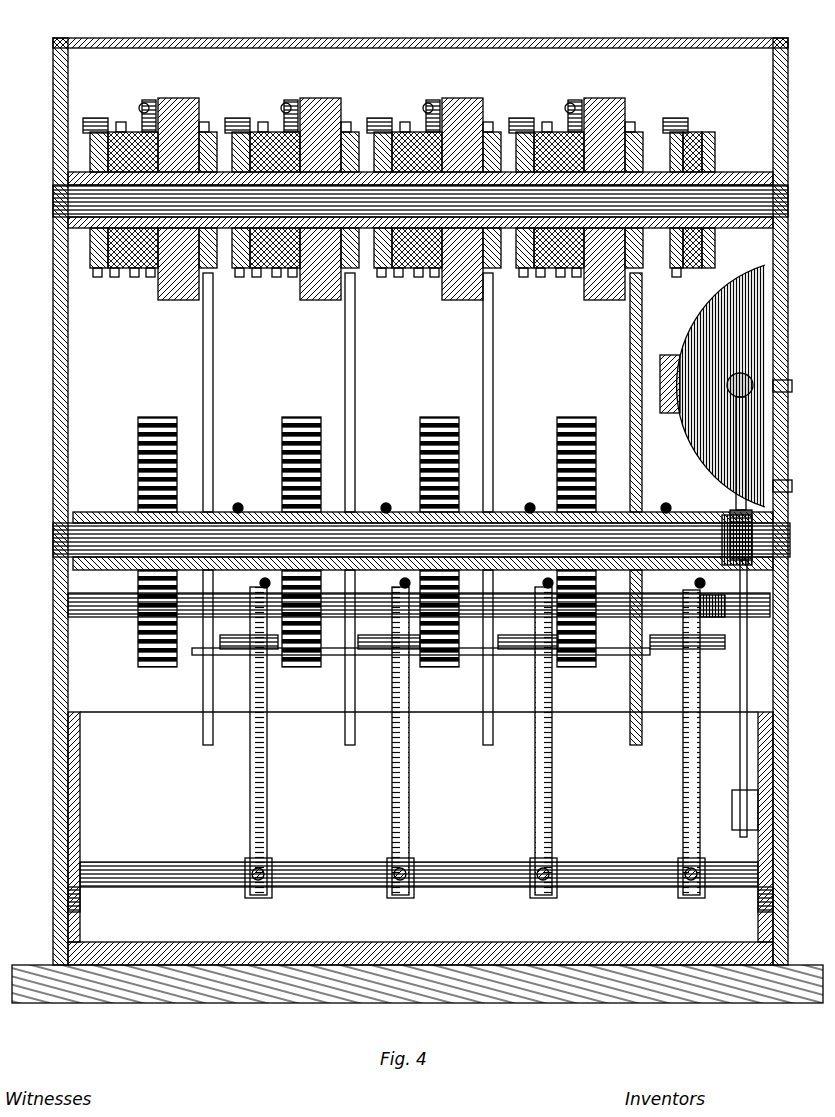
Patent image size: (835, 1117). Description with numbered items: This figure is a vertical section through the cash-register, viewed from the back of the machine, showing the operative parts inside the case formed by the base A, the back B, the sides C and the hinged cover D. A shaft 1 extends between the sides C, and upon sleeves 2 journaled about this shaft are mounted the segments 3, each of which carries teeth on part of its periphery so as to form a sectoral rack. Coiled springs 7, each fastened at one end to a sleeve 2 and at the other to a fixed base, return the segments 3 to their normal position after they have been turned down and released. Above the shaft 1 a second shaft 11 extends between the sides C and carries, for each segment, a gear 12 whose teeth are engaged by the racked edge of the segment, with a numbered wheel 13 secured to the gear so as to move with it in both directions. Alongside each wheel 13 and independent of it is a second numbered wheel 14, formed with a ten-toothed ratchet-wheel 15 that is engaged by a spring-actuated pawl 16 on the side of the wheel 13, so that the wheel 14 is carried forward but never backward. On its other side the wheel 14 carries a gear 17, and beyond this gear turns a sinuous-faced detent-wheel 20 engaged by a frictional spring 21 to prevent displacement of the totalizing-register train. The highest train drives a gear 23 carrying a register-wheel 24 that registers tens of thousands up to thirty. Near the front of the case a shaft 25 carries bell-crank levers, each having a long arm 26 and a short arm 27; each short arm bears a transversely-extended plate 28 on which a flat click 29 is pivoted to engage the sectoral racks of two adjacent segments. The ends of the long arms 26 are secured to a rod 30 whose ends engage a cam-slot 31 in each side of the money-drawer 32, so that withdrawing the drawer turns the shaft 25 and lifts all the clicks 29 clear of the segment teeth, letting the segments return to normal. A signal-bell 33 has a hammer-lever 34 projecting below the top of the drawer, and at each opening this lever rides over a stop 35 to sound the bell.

The base A is at (252, 1003).
The back B is at (346, 245).
The sides C is at (53, 362).
The cover D is at (208, 38).
The shaft 1 is at (53, 540).
The sleeves 2 is at (118, 512).
The segments 3 is at (213, 392).
The coiled springs 7 is at (157, 417).
The shaft 11 is at (53, 190).
The gear 12 is at (420, 182).
The wheel 13 is at (176, 98).
The second numbered wheel 14 is at (340, 285).
The ten-toothed ratchet-wheel 15 is at (136, 277).
The spring-actuated pawl 16 is at (147, 100).
The gear 17 is at (335, 114).
The sinuous-faced detent-wheel 20 is at (98, 277).
The frictional spring 21 is at (97, 118).
The gear 23 is at (676, 277).
The register-wheel 24 is at (700, 132).
The shaft 25 is at (108, 617).
The long arm 26 is at (271, 738).
The short arm 27 is at (465, 584).
The transversely-extended plate 28 is at (476, 635).
The flat click 29 is at (243, 655).
The rod 30 is at (142, 862).
The cam-slot 31 is at (80, 898).
The money-drawer 32 is at (419, 767).
The signal-bell 33 is at (685, 462).
The hammer-lever 34 is at (740, 742).
The stop 35 is at (738, 830).